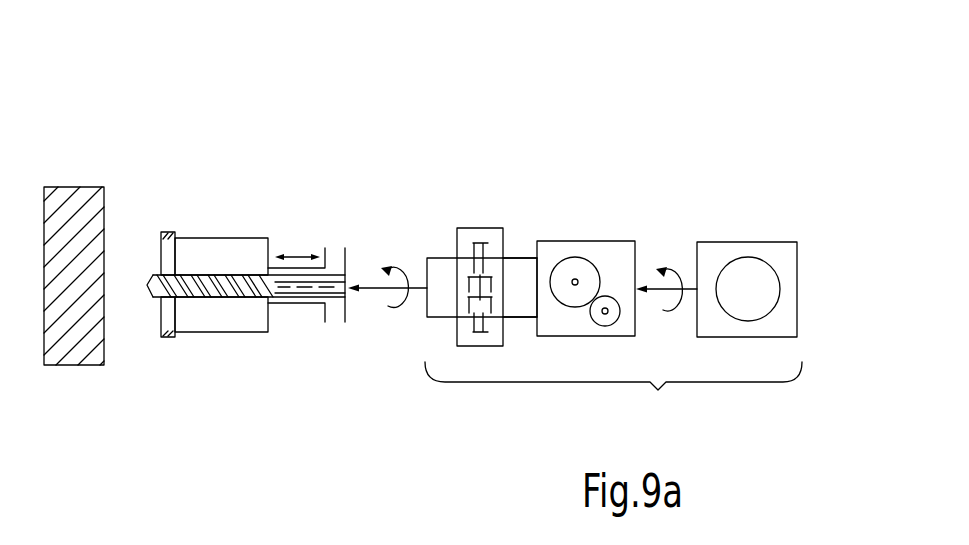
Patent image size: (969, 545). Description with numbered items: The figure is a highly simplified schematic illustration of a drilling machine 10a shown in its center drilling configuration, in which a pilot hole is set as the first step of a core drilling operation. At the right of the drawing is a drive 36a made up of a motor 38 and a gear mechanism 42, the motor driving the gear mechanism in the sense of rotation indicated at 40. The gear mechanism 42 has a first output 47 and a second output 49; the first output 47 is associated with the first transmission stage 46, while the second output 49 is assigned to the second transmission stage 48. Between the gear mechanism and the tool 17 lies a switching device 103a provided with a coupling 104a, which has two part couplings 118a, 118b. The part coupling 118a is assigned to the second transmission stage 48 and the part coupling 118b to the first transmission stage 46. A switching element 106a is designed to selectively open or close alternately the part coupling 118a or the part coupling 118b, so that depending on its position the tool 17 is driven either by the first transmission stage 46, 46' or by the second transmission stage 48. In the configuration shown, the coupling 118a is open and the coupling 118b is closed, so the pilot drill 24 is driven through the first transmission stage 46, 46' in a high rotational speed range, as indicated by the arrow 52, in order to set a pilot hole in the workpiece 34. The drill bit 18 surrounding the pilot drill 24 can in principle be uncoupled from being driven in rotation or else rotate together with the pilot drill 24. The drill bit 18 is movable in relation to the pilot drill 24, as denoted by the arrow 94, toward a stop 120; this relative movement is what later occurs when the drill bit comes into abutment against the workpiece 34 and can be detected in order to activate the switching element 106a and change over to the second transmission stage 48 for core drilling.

The drilling machine 10a is at (614, 84).
The tool 17 is at (194, 382).
The drill bit 18 is at (217, 228).
The pilot drill 24 is at (148, 298).
The workpiece 34 is at (62, 204).
The drive 36a is at (613, 390).
The motor 38 is at (738, 241).
The direction of rotation of motor shaft 40 is at (677, 266).
The gear mechanism 42 is at (579, 228).
The first transmission stage 46 is at (418, 352).
The first transmission stage 46' is at (390, 242).
The first output 47 is at (519, 318).
The second transmission stage 48 is at (437, 258).
The second output 49 is at (518, 257).
The arrow 52 is at (395, 314).
The arrow 94 is at (296, 252).
The switching device 103a is at (477, 140).
The coupling 104a is at (429, 279).
The switching element 106a is at (473, 288).
The part coupling 118a is at (476, 248).
The part coupling 118b is at (470, 326).
The stop 120 is at (346, 265).